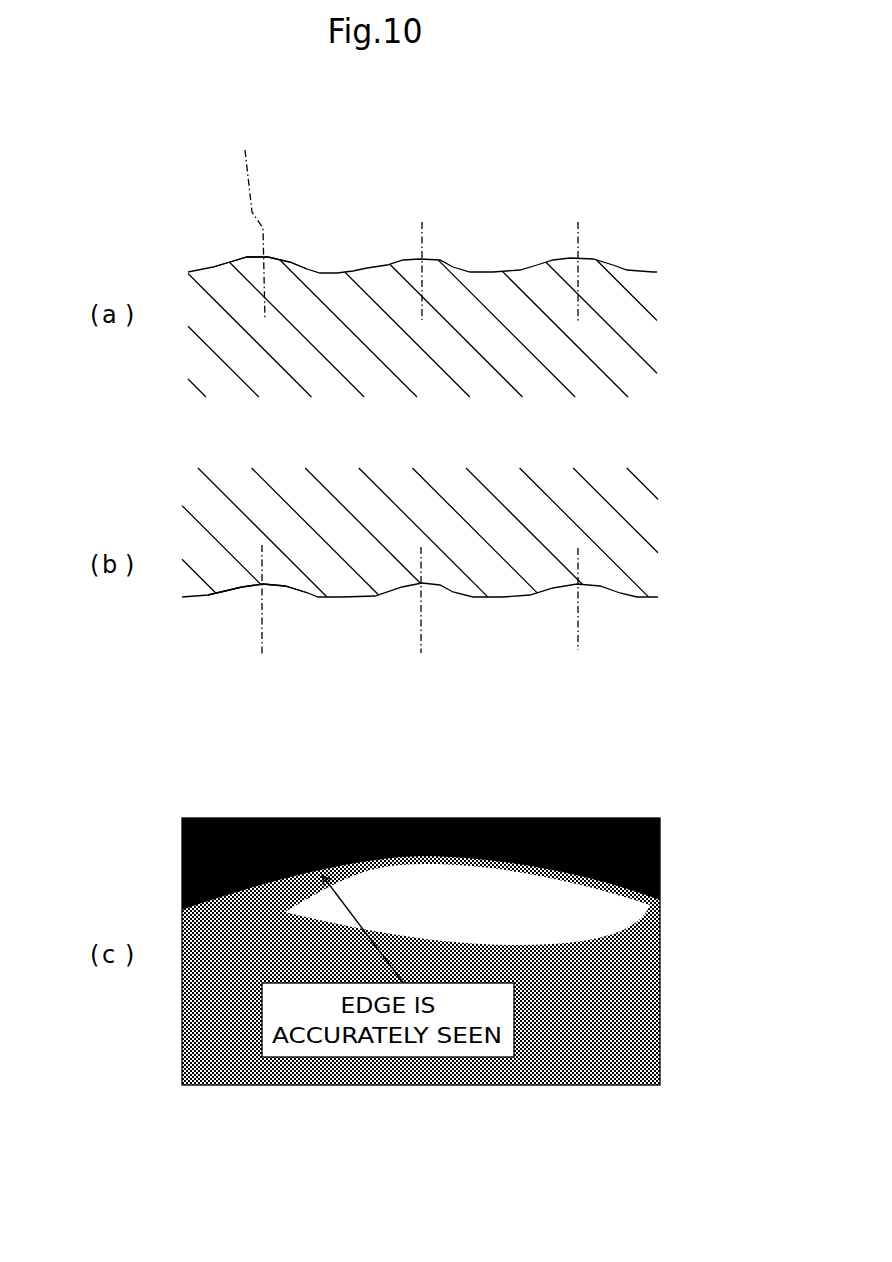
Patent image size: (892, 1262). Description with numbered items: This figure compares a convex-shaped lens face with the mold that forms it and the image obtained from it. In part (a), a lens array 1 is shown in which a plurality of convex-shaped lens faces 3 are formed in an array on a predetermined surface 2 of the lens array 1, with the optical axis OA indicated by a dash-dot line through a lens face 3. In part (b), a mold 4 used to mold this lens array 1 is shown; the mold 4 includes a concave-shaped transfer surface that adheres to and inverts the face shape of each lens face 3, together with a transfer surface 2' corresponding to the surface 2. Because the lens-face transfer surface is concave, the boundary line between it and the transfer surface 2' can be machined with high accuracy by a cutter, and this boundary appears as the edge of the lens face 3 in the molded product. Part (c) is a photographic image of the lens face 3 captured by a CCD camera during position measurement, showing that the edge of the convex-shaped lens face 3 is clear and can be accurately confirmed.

The lens array 1 is at (493, 270).
The surface 2 is at (422, 229).
The lens face 3 is at (240, 258).
The mold 4 is at (497, 600).
The transfer surface 2' is at (420, 640).
The optical axis OA is at (246, 220).